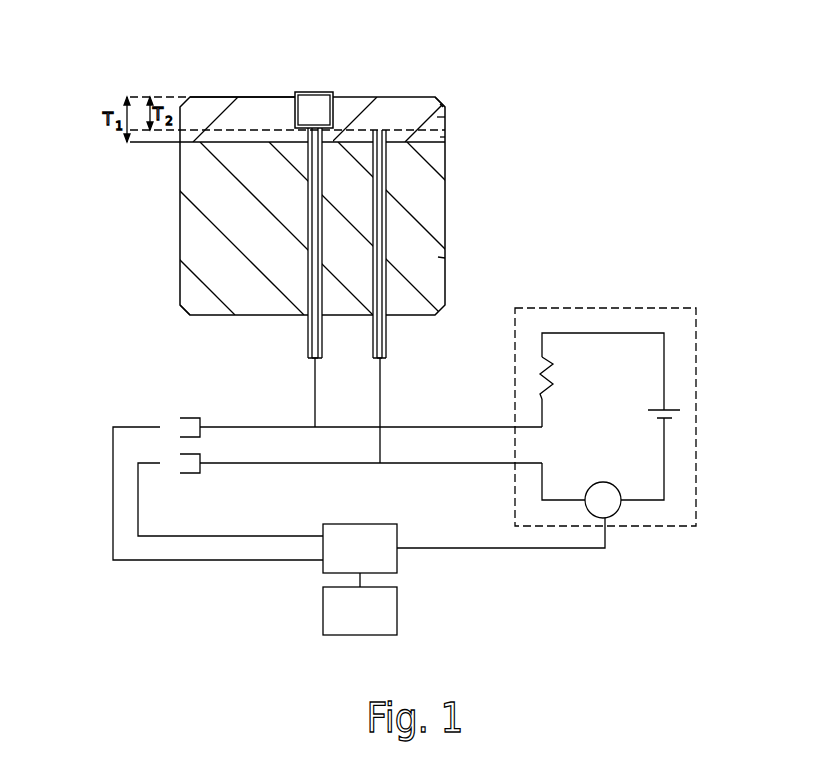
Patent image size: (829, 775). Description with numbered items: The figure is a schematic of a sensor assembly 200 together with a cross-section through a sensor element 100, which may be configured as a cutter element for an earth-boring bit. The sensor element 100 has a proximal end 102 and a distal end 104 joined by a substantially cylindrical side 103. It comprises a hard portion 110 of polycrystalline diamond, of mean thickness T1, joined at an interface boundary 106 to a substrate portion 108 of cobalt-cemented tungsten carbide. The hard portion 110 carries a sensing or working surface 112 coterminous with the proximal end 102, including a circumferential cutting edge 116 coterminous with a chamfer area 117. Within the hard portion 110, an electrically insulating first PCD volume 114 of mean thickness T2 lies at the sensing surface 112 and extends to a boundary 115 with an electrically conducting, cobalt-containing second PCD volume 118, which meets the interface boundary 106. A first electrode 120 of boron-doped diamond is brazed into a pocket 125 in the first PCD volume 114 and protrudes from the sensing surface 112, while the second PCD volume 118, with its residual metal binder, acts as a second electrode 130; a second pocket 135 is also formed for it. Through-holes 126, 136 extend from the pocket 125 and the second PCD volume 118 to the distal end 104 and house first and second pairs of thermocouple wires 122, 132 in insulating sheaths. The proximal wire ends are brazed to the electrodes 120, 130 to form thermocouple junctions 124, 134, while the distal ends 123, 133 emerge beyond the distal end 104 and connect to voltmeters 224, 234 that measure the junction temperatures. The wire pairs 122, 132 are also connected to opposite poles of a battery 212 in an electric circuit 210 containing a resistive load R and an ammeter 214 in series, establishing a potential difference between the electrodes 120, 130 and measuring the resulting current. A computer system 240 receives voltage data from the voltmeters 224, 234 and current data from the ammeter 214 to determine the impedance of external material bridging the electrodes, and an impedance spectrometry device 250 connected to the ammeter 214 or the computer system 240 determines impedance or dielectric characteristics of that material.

The sensor element 100 is at (120, 43).
The proximal end 102 is at (339, 76).
The side 103 is at (460, 207).
The distal end 104 is at (210, 332).
The interface boundary 106 is at (208, 153).
The substrate portion 108 is at (438, 257).
The hard portion 110 is at (521, 92).
The sensing surface 112 is at (239, 85).
The first PCD volume 114 is at (437, 117).
The boundary 115 is at (203, 138).
The circumferential cutting edge 116 is at (436, 96).
The chamfer area 117 is at (440, 103).
The second PCD volume 118 is at (445, 137).
The first electrode 120 is at (310, 91).
The first pair of thermocouple wires 122 is at (308, 330).
The distal end of first pair of thermocouple wires 123 is at (313, 360).
The first thermocouple junction 124 is at (307, 135).
The pocket 125 is at (286, 121).
The first through-hole 126 is at (305, 243).
The second electrode 130 is at (415, 199).
The second pair of thermocouple wires 132 is at (387, 331).
The distal end of second pair of thermocouple wires 133 is at (383, 358).
The second thermocouple junction 134 is at (391, 143).
The second pocket 135 is at (360, 129).
The second through-hole 136 is at (370, 237).
The sensor assembly 200 is at (606, 163).
The electric circuit 210 is at (636, 439).
The battery 212 is at (672, 408).
The ammeter 214 is at (614, 511).
The first voltmeter 224 is at (193, 413).
The second voltmeter 234 is at (196, 474).
The computer system 240 is at (360, 548).
The impedance spectrometry device 250 is at (360, 611).